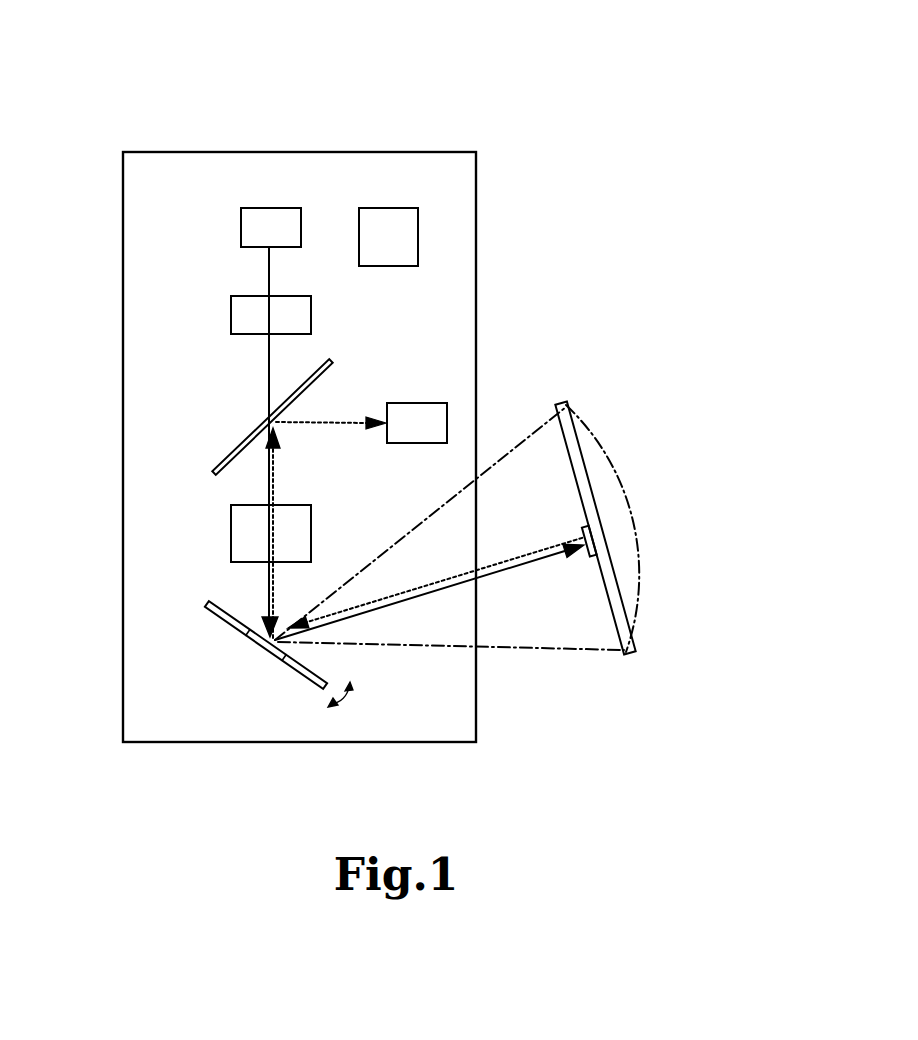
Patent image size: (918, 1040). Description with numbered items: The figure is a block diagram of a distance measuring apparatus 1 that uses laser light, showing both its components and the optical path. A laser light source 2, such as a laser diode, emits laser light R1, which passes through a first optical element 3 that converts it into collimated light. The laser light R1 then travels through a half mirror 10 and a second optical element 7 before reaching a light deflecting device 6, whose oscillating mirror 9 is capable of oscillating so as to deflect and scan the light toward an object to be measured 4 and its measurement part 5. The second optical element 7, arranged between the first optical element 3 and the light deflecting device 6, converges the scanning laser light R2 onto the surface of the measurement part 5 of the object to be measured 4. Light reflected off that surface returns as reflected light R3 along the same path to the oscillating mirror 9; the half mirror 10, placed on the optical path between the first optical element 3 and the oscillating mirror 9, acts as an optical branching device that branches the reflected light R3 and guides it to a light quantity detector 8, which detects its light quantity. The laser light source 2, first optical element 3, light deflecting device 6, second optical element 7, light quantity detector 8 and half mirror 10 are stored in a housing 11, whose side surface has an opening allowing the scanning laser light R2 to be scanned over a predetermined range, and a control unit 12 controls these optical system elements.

The distance measuring apparatus 1 is at (560, 98).
The laser light source 2 is at (241, 232).
The first optical element 3 is at (231, 319).
The object to be measured 4 is at (630, 618).
The measurement part 5 is at (590, 537).
The light deflecting device 6 is at (316, 686).
The second optical element 7 is at (231, 538).
The light quantity detector 8 is at (447, 412).
The oscillating mirror 9 is at (254, 640).
The half mirror 10 is at (213, 465).
The housing 11 is at (476, 254).
The control unit 12 is at (418, 226).
The laser light R1 is at (269, 278).
The scanning laser light R2 is at (530, 568).
The reflected light R3 is at (512, 562).